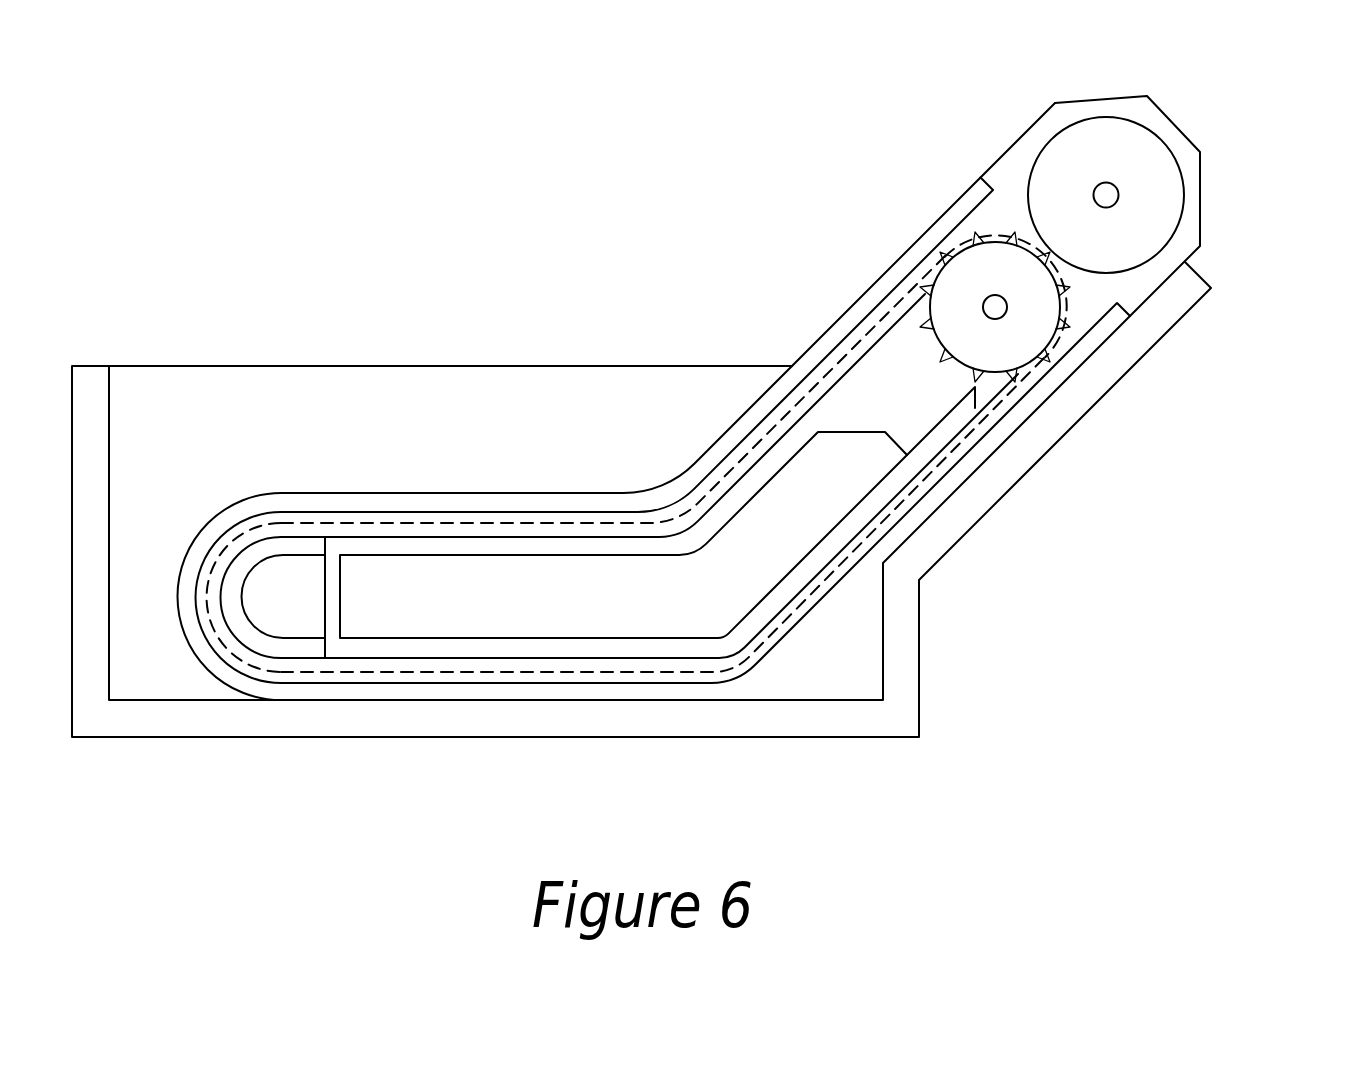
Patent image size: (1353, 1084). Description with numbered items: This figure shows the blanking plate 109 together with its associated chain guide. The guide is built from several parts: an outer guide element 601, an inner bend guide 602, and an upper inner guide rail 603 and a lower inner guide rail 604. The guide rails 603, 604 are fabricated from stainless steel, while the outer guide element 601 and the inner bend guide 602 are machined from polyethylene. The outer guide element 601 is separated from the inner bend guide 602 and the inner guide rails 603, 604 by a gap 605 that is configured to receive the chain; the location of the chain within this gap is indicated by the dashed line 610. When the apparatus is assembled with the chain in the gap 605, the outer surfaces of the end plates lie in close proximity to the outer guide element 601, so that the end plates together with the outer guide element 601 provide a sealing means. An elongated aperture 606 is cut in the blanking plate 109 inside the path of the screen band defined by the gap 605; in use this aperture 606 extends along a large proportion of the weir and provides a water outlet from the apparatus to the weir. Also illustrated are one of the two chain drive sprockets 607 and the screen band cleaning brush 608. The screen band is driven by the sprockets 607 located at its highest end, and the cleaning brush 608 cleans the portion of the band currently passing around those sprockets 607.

The blanking plate 109 is at (167, 417).
The outer guide element 601 is at (905, 263).
The inner bend guide 602 is at (295, 545).
The upper inner guide rail 603 is at (480, 545).
The lower inner guide rail 604 is at (427, 657).
The gap 605 is at (610, 515).
The elongated aperture 606 is at (680, 598).
The chain drive sprocket 607 is at (1015, 340).
The screen band cleaning brush 608 is at (1130, 213).
The dashed line 610 is at (325, 670).